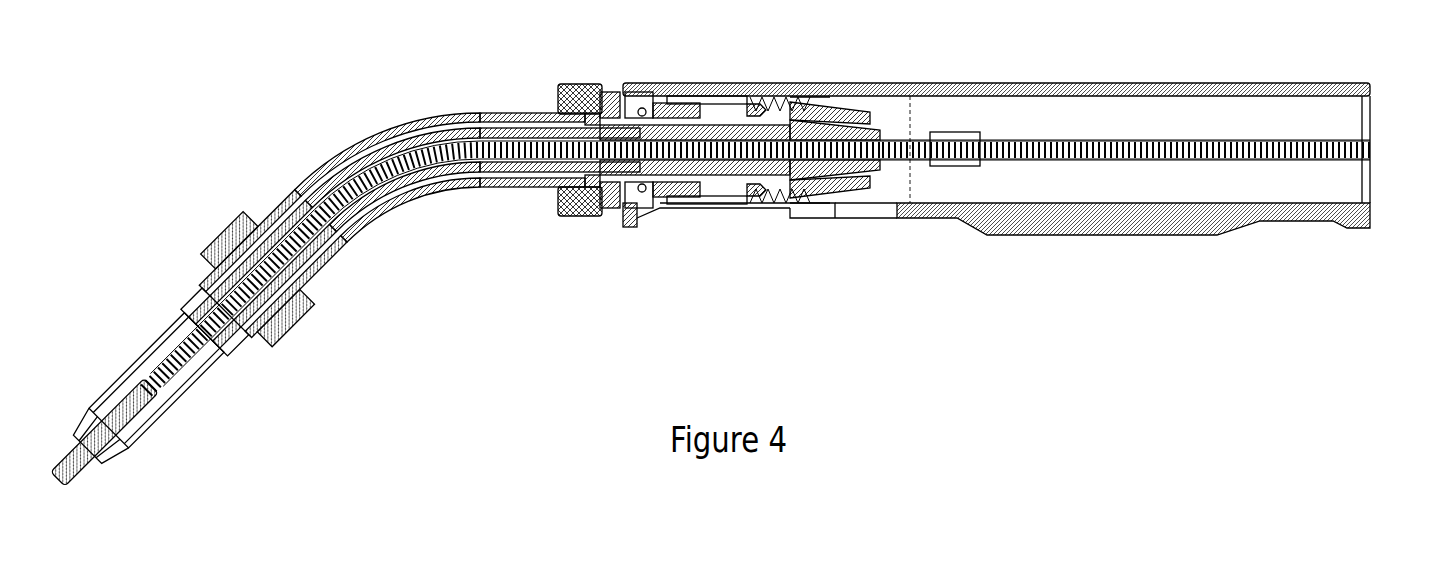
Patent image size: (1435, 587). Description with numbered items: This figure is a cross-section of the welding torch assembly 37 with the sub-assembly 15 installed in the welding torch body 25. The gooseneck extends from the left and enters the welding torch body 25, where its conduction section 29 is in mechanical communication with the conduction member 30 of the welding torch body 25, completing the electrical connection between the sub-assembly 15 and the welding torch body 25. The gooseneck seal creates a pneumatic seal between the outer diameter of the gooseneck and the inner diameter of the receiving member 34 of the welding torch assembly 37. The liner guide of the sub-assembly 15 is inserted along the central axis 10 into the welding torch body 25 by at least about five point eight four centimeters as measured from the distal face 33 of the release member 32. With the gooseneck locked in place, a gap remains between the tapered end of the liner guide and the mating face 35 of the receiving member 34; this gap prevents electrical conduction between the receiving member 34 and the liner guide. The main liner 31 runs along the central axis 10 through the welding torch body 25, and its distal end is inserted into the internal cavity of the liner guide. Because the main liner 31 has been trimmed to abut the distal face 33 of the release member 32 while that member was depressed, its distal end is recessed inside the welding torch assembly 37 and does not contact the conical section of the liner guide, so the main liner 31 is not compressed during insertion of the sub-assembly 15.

The central axis 10 is at (1402, 148).
The sub-assembly 15 is at (330, 145).
The welding torch body 25 is at (1025, 82).
The conduction section 29 is at (748, 205).
The conduction member 30 is at (745, 88).
The main liner 31 is at (1108, 160).
The release member 32 is at (574, 88).
The distal face 33 is at (560, 110).
The receiving member 34 is at (868, 212).
The mating face 35 is at (826, 88).
The welding torch assembly 37 is at (182, 82).